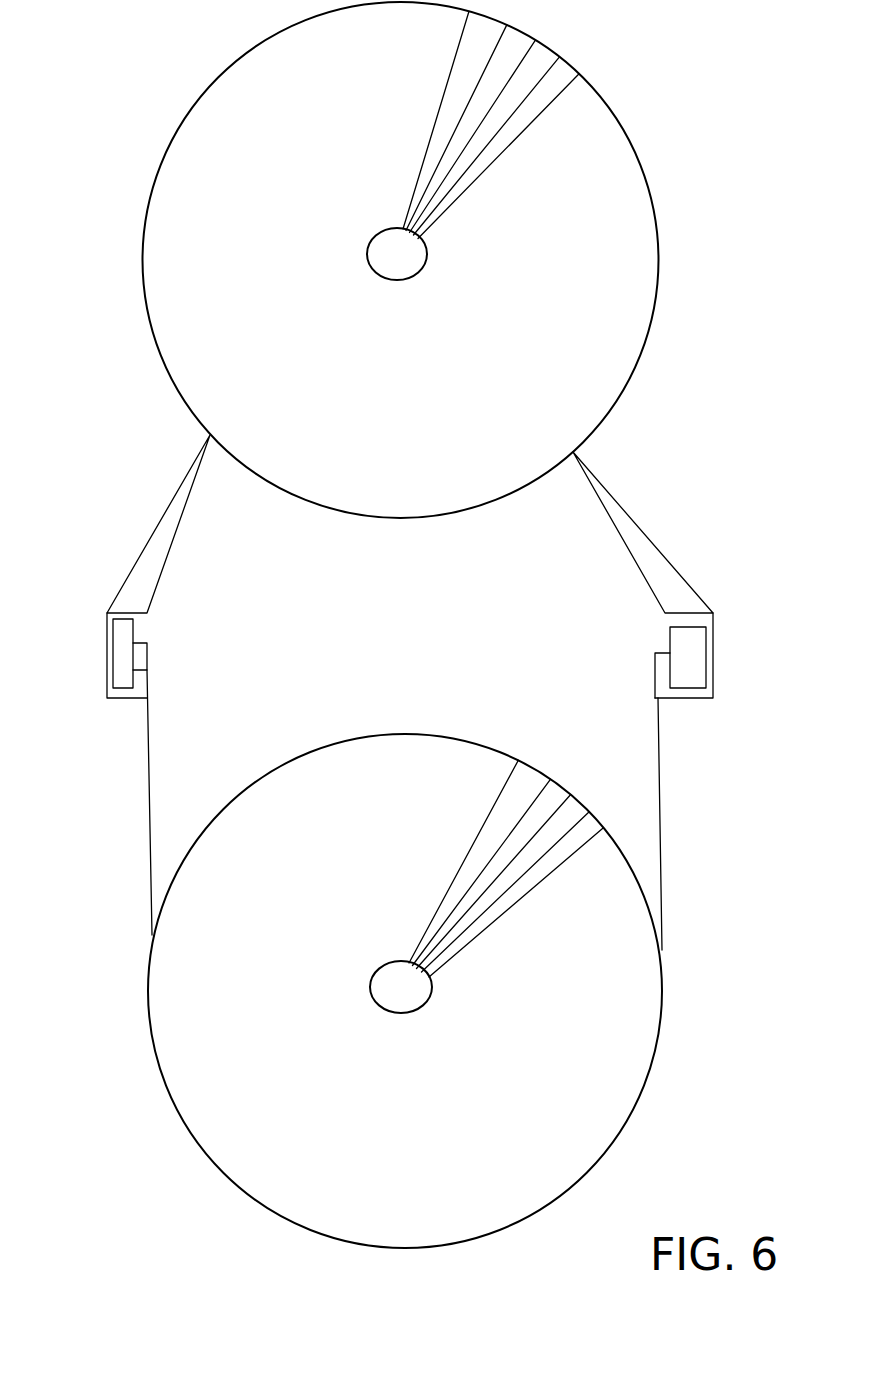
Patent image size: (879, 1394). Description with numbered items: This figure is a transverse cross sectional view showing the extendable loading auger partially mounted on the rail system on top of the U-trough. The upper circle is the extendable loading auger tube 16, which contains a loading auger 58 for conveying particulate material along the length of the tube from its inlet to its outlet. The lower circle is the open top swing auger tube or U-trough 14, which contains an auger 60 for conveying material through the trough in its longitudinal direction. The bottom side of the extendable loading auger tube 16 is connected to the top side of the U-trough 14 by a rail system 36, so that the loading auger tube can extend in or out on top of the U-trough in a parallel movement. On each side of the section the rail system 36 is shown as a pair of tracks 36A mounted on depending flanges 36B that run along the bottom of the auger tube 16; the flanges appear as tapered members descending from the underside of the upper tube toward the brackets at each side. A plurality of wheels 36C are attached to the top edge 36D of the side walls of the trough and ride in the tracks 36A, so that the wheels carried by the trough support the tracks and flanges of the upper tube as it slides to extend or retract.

The U-trough 14 is at (662, 910).
The extendable loading auger tube 16 is at (660, 290).
The rail system 36 is at (423, 692).
The tracks 36A is at (713, 673).
The depending flanges 36B is at (617, 498).
The wheels 36C is at (693, 670).
The top edge 36D is at (655, 685).
The loading auger 58 is at (428, 256).
The auger 60 is at (432, 993).